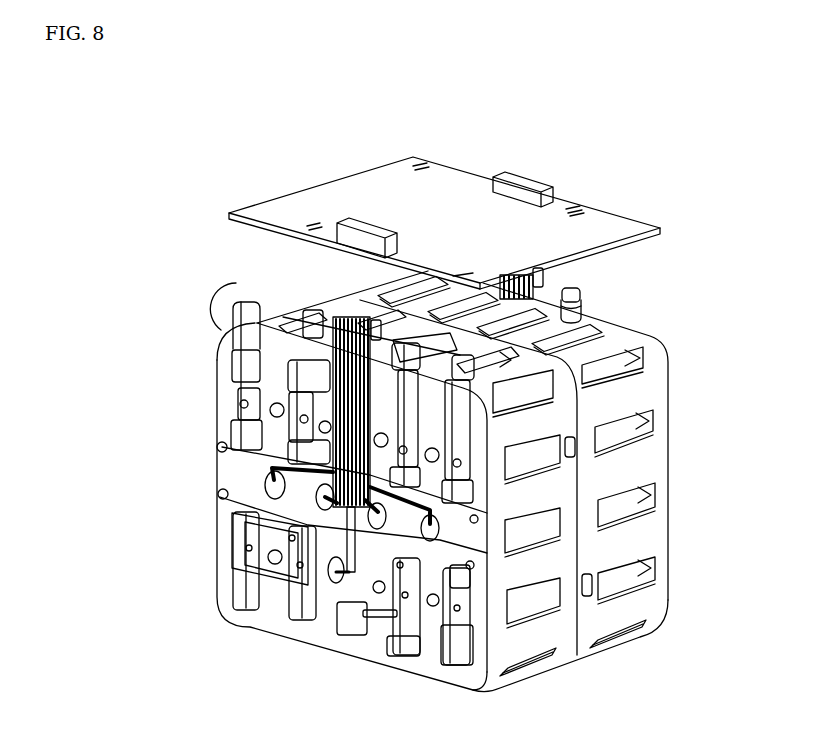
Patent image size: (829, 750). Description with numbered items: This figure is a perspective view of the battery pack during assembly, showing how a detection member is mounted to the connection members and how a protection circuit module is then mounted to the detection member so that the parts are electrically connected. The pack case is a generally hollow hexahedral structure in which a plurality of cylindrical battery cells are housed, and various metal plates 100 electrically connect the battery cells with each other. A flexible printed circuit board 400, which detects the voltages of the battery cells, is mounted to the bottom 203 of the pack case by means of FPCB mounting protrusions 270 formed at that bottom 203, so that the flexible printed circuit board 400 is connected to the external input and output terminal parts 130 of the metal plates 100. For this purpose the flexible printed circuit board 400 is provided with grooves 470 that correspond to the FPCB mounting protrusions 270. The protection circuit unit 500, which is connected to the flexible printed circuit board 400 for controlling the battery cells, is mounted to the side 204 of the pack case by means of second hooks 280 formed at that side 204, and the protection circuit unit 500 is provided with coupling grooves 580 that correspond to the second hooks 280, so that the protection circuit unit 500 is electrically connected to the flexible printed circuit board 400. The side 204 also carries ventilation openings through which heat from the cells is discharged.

The metal plates 100 is at (224, 384).
The external input and output terminal parts 130 is at (222, 295).
The bottom 203 is at (325, 628).
The side 204 is at (578, 318).
The FPCB mounting protrusions 270 is at (220, 447).
The second hooks 280 is at (576, 288).
The flexible printed circuit board 400 is at (217, 470).
The grooves 470 is at (222, 442).
The protection circuit unit 500 is at (610, 212).
The coupling grooves 580 is at (577, 211).